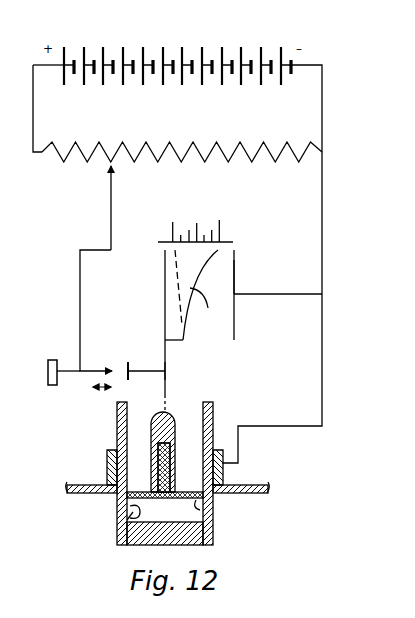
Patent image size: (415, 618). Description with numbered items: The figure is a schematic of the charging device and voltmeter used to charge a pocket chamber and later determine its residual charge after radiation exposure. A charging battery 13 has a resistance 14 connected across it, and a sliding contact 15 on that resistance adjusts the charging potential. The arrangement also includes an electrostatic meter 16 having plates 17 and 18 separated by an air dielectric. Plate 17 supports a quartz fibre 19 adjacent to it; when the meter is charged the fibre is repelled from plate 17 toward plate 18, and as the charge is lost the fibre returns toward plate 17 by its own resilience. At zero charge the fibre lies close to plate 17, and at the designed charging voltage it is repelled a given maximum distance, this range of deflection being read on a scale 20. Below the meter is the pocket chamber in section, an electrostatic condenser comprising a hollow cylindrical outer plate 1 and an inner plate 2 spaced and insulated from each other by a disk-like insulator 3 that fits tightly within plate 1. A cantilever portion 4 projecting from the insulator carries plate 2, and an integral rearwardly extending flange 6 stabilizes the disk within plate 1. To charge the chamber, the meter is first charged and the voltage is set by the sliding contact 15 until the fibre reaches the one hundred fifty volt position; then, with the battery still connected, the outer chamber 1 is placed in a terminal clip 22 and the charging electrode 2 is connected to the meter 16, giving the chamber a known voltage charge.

The plate 1 is at (117, 422).
The plate 2 is at (176, 428).
The insulator 3 is at (207, 507).
The cantilever portion 4 is at (171, 468).
The flange 6 is at (128, 521).
The charging battery 13 is at (204, 47).
The resistance 14 is at (241, 143).
The sliding contact 15 is at (108, 167).
The electrostatic meter 16 is at (167, 375).
The plate 17 is at (165, 306).
The plate 18 is at (237, 273).
The fibre 19 is at (198, 302).
The scale 20 is at (221, 233).
The terminal clip 22 is at (97, 494).